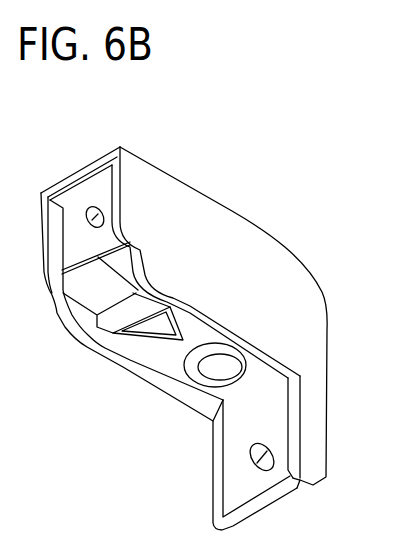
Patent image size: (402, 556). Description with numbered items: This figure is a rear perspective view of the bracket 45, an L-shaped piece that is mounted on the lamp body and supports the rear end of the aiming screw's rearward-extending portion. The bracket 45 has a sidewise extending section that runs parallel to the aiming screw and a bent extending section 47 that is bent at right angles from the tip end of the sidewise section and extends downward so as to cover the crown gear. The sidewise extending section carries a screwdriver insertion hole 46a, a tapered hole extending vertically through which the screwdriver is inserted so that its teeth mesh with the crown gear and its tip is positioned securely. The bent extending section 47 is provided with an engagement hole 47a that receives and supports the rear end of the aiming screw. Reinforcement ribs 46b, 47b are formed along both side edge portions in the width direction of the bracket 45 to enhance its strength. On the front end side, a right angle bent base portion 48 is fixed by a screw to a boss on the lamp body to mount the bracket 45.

The bracket 45 is at (253, 210).
The screwdriver insertion hole 46a is at (232, 360).
The reinforcement rib 46b is at (210, 197).
The bent extending section 47 is at (255, 424).
The engagement hole 47a is at (262, 458).
The reinforcement rib 47b is at (85, 348).
The right angle bent base portion 48 is at (77, 208).